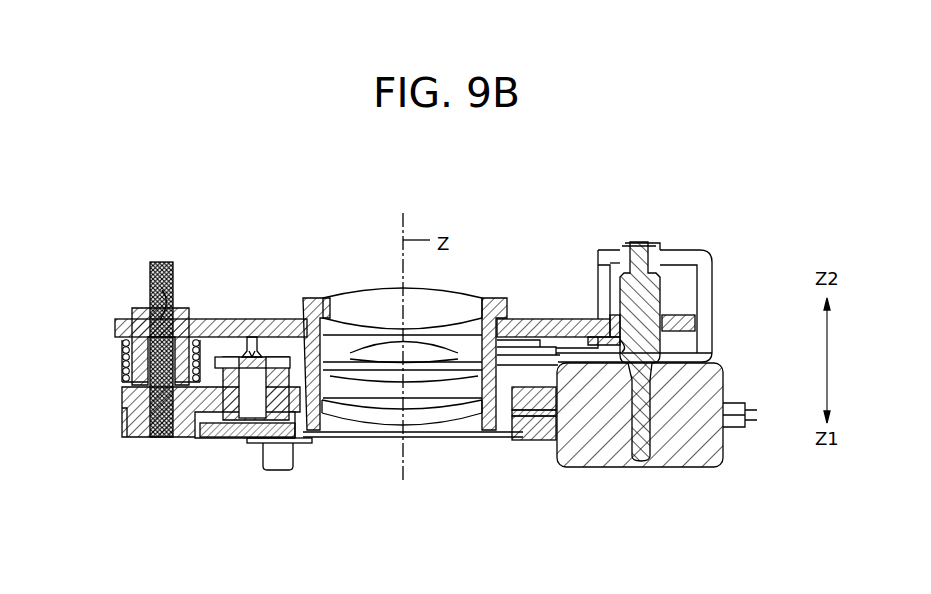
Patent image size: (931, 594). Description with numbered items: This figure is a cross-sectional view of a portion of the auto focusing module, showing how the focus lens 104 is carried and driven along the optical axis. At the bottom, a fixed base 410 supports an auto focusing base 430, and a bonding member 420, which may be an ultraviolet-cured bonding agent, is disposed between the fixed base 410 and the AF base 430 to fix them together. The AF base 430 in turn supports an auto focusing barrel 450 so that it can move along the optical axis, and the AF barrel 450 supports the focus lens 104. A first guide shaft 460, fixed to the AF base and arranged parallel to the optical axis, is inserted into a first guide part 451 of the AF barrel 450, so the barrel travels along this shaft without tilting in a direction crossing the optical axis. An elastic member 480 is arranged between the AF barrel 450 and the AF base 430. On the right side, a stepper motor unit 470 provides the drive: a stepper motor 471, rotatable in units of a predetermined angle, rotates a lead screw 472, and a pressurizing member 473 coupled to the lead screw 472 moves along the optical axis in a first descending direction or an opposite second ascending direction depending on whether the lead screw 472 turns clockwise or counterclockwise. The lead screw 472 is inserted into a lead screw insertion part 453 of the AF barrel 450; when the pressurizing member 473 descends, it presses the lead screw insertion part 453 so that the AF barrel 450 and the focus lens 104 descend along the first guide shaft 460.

The focus lens 104 is at (458, 292).
The fixed base 410 is at (535, 442).
The bonding member 420 is at (523, 413).
The auto focusing base 430 is at (116, 402).
The auto focusing barrel 450 is at (292, 290).
The first guide part 451 is at (161, 320).
The lead screw insertion part 453 is at (621, 340).
The first guide shaft 460 is at (150, 283).
The stepper motor unit 470 is at (720, 263).
The stepper motor 471 is at (695, 453).
The lead screw 472 is at (651, 297).
The pressurizing member 473 is at (685, 322).
The elastic member 480 is at (125, 350).